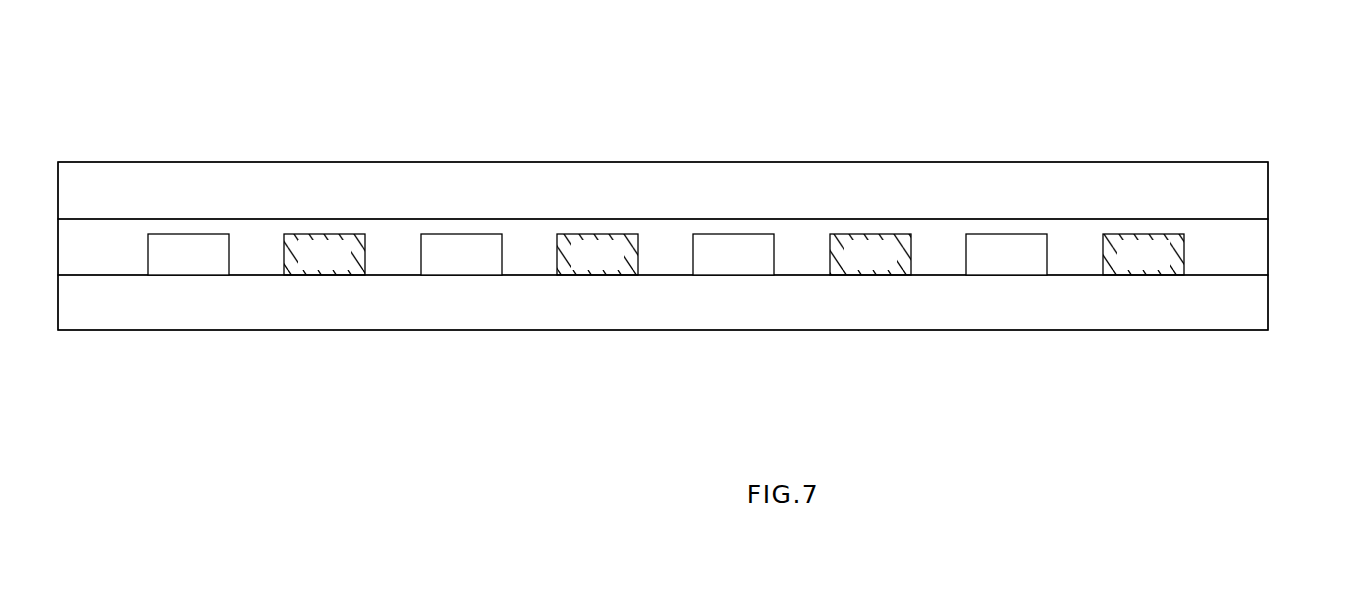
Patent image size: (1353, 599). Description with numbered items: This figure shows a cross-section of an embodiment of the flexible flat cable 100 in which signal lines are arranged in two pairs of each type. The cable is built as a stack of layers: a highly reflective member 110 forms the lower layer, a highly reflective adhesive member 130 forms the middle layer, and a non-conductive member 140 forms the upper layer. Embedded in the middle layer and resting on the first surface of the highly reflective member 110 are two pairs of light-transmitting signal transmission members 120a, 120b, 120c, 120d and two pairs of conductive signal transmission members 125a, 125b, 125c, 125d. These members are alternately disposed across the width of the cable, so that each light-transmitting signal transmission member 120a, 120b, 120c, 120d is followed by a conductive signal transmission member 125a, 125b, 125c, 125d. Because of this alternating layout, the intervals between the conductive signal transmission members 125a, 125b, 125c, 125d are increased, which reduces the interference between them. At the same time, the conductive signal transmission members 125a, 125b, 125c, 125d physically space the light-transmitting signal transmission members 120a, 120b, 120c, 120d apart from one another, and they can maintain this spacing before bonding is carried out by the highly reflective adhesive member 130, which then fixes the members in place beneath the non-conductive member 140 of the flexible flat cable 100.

The flexible flat cable 100 is at (660, 97).
The highly reflective member 110 is at (1258, 301).
The light-transmitting signal transmission member 120a is at (162, 266).
The light-transmitting signal transmission member 120b is at (435, 266).
The light-transmitting signal transmission member 120c is at (707, 266).
The light-transmitting signal transmission member 120d is at (980, 266).
The conductive signal transmission member 125a is at (298, 266).
The conductive signal transmission member 125b is at (571, 266).
The conductive signal transmission member 125c is at (844, 266).
The conductive signal transmission member 125d is at (1117, 266).
The highly reflective adhesive member 130 is at (1258, 247).
The non-conductive member 140 is at (1258, 185).